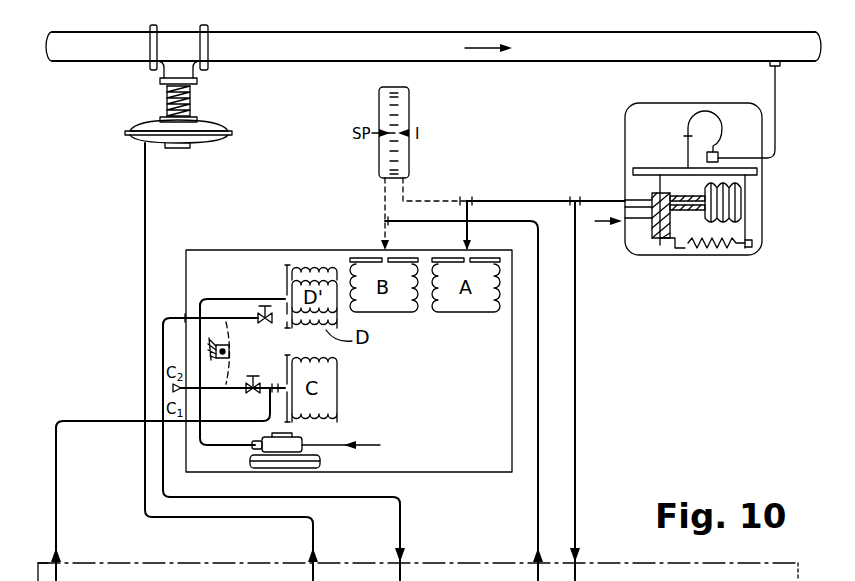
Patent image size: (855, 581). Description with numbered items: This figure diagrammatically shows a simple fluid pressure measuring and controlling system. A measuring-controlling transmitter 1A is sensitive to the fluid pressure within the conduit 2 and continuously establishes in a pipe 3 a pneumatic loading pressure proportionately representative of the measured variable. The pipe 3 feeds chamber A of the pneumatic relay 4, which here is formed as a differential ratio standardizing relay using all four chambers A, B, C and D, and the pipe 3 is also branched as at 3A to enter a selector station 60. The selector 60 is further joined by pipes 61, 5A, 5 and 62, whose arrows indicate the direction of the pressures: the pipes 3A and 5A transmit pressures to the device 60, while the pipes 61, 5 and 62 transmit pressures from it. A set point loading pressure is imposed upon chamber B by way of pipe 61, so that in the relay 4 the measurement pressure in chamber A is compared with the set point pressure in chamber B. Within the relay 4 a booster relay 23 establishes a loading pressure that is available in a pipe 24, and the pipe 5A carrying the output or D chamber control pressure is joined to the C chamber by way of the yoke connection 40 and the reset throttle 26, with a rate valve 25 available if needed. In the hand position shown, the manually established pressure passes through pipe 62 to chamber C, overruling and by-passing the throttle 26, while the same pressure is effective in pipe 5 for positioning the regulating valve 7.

The measuring-controlling transmitter 1A is at (762, 196).
The conduit 2 is at (552, 61).
The pipe 3 is at (545, 200).
The branch pipe 3A is at (575, 505).
The pneumatic relay 4 is at (457, 399).
The output pipe 5 is at (313, 535).
The pipe 5A is at (400, 520).
The regulating valve 7 is at (231, 101).
The booster relay 23 is at (322, 464).
The pipe 24 is at (224, 452).
The rate valve 25 is at (267, 325).
The reset throttle 26 is at (252, 395).
The yoke connection 40 is at (230, 362).
The selector station 60 is at (460, 561).
The pipe 61 is at (537, 500).
The pipe 62 is at (56, 511).